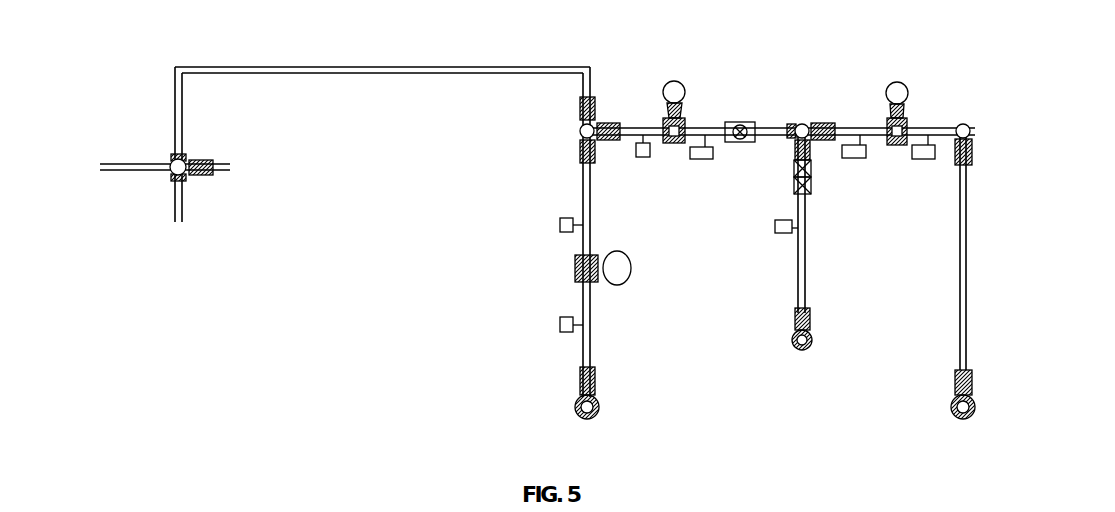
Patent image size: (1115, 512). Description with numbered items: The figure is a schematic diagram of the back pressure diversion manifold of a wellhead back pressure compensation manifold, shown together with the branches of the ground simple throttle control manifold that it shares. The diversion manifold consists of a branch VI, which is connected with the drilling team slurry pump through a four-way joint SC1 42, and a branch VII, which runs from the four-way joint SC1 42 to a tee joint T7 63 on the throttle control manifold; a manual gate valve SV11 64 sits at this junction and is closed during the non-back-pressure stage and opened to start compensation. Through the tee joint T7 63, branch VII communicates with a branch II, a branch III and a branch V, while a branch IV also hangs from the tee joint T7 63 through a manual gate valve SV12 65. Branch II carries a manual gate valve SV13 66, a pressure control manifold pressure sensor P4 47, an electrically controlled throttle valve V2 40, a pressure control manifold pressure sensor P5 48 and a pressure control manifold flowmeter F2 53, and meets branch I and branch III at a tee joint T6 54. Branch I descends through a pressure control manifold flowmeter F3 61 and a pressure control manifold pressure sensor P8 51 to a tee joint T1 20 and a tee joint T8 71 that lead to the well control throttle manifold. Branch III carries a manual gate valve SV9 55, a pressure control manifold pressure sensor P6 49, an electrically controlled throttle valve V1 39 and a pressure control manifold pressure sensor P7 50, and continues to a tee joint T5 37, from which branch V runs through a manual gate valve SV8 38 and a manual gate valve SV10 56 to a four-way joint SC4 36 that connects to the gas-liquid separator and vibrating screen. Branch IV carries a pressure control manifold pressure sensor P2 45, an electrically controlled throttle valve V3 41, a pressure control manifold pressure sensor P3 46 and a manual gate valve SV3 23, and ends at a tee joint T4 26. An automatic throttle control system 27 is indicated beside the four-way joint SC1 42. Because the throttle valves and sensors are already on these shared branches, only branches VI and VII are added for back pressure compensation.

The branch I is at (808, 250).
The branch II is at (650, 128).
The branch III is at (877, 128).
The branch IV is at (591, 352).
The branch V is at (968, 287).
The branch VI is at (117, 160).
The branch VII is at (375, 66).
The tee joint T1 20 is at (810, 318).
The manual gate valve SV3 23 is at (580, 381).
The tee joint T4 26 is at (587, 429).
The automatic throttle control system 27 is at (198, 178).
The four-way joint SC4 36 is at (952, 402).
The tee joint T5 37 is at (971, 126).
The manual gate valve SV8 38 is at (972, 155).
The electrically controlled throttle valve V1 39 is at (909, 96).
The electrically controlled throttle valve V2 40 is at (687, 101).
The electrically controlled throttle valve V3 41 is at (630, 259).
The four-way joint SC1 42 is at (186, 160).
The pressure control manifold pressure sensor P2 45 is at (563, 233).
The pressure control manifold pressure sensor P3 46 is at (560, 325).
The pressure control manifold pressure sensor P4 47 is at (639, 158).
The pressure control manifold pressure sensor P5 48 is at (706, 159).
The pressure control manifold pressure sensor P6 49 is at (856, 159).
The pressure control manifold pressure sensor P7 50 is at (918, 160).
The pressure control manifold pressure sensor P8 51 is at (774, 233).
The pressure control manifold flowmeter F2 53 is at (756, 116).
The tee joint T6 54 is at (802, 123).
The manual gate valve SV9 55 is at (823, 125).
The manual gate valve SV10 56 is at (985, 366).
The pressure control manifold flowmeter F3 61 is at (812, 190).
The tee joint T7 63 is at (580, 130).
The manual gate valve SV11 64 is at (596, 104).
The manual gate valve SV12 65 is at (580, 152).
The manual gate valve SV13 66 is at (606, 126).
The tee joint T8 71 is at (814, 341).